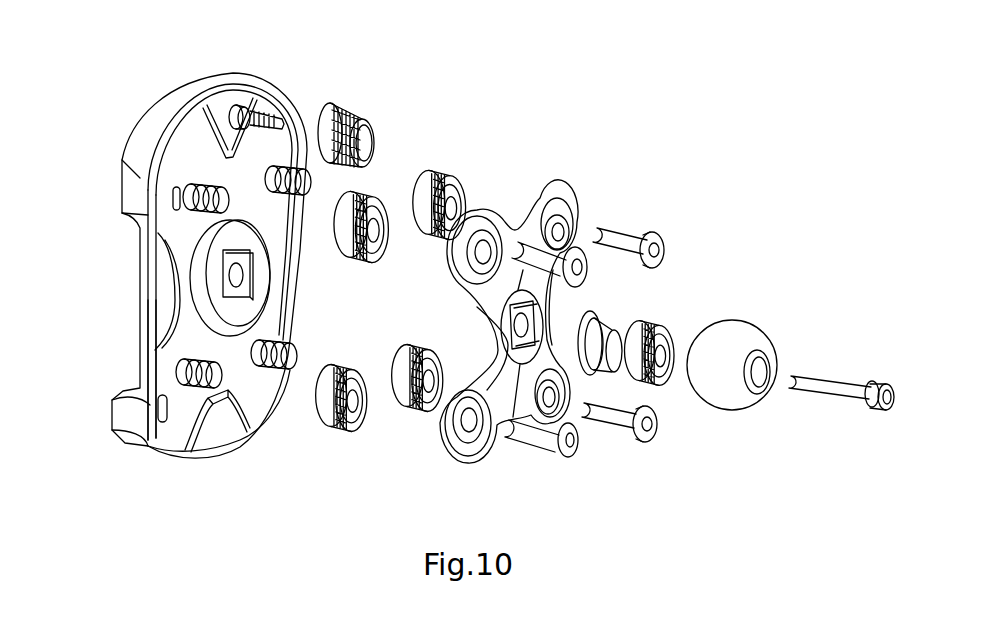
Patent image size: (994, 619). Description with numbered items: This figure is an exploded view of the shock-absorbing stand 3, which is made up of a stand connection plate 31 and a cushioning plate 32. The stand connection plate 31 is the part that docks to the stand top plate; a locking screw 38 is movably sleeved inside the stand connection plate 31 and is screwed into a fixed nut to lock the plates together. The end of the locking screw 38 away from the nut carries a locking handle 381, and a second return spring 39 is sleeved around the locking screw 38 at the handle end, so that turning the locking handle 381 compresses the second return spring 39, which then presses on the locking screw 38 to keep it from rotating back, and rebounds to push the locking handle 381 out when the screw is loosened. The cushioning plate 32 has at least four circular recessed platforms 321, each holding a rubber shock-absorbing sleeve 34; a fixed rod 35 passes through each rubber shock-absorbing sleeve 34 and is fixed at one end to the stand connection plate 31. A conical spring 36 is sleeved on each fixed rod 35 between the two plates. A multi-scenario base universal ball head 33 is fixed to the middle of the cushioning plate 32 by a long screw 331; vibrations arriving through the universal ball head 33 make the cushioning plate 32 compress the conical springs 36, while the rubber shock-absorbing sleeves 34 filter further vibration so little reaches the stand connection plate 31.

The shock-absorbing stand 3 is at (121, 157).
The stand connection plate 31 is at (200, 148).
The cushioning plate 32 is at (512, 283).
The recessed platform 321 is at (445, 428).
The multi-scenario base universal ball head 33 is at (637, 345).
The long screw 331 is at (822, 383).
The rubber shock-absorbing sleeve 34 is at (447, 187).
The fixed rod 35 is at (512, 264).
The conical spring 36 is at (175, 212).
The locking screw 38 is at (250, 110).
The locking handle 381 is at (340, 112).
The second return spring 39 is at (230, 104).